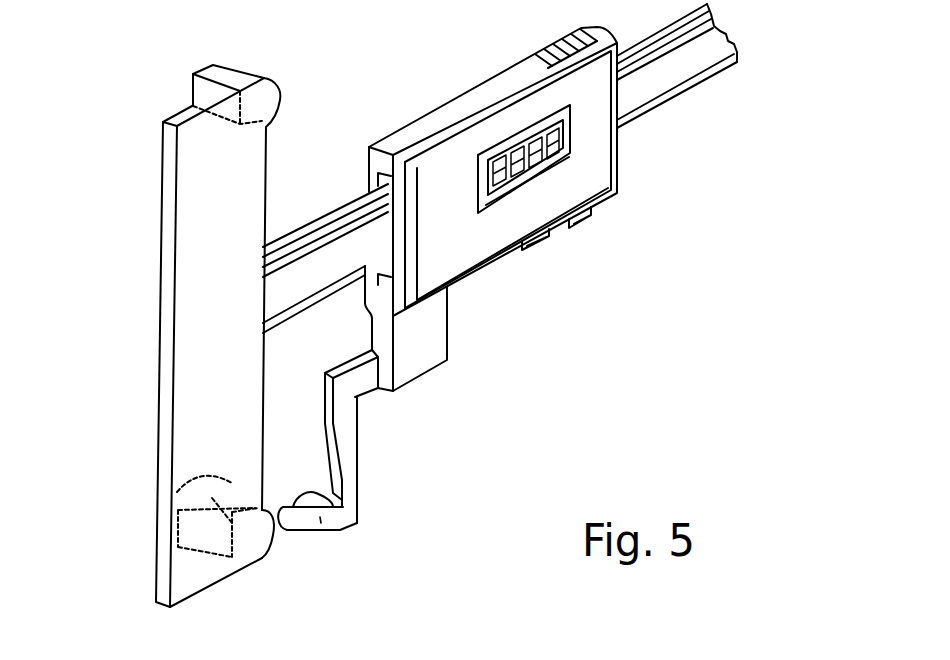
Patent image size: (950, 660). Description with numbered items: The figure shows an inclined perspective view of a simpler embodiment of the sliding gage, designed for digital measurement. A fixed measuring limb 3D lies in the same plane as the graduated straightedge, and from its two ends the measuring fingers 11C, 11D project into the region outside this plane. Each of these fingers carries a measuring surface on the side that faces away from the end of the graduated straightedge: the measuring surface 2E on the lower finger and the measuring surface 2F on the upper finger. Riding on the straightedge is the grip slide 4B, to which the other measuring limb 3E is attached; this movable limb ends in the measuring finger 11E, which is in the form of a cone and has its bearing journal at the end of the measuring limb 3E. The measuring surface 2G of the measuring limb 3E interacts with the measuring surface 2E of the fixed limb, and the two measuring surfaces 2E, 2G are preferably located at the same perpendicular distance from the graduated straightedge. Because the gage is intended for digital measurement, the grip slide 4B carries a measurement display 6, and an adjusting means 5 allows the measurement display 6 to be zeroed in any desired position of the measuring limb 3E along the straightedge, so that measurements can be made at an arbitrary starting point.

The fixed measuring limb 3D is at (143, 291).
The measuring limb 3E is at (368, 447).
The grip slide 4B is at (448, 113).
The adjusting means 5 is at (576, 224).
The measurement display 6 is at (548, 132).
The measuring surface 2E is at (157, 498).
The measuring surface 2F is at (230, 62).
The measuring surface 2G is at (322, 532).
The measuring finger 11C is at (257, 560).
The measuring finger 11D is at (251, 65).
The measuring finger 11E is at (292, 506).